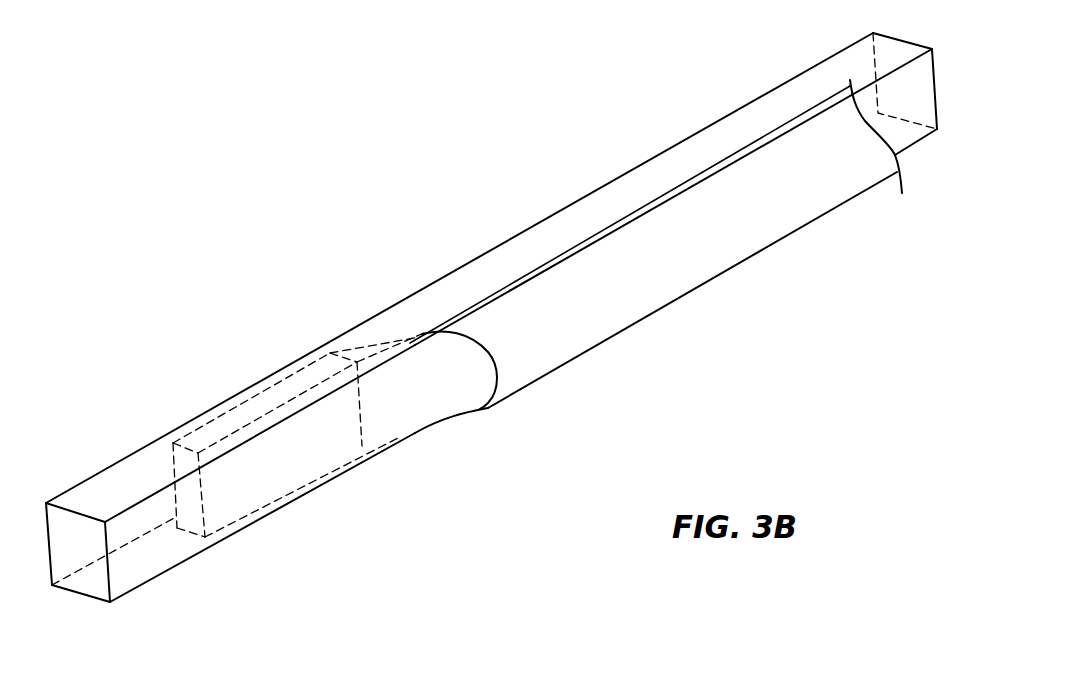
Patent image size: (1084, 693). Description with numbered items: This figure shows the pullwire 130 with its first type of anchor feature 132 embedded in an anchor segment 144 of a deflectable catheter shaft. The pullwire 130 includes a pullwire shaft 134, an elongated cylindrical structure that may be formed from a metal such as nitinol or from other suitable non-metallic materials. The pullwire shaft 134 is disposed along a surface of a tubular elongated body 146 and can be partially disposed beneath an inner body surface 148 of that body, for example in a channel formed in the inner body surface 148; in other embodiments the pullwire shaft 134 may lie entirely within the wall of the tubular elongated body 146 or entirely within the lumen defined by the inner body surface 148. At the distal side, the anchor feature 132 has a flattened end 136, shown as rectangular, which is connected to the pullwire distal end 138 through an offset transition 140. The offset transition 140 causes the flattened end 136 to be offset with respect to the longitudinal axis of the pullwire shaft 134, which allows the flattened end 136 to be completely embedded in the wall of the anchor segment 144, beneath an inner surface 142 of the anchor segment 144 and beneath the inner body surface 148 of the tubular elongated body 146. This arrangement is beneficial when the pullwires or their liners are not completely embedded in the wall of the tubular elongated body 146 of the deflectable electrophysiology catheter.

The pullwire 130 is at (664, 357).
The anchor feature 132 is at (240, 392).
The pullwire shaft 134 is at (715, 245).
The flattened end 136 is at (277, 462).
The pullwire distal end 138 is at (520, 378).
The offset transition 140 is at (430, 400).
The inner surface 142 is at (160, 577).
The anchor segment 144 is at (80, 475).
The tubular elongated body 146 is at (613, 155).
The inner body surface 148 is at (918, 143).